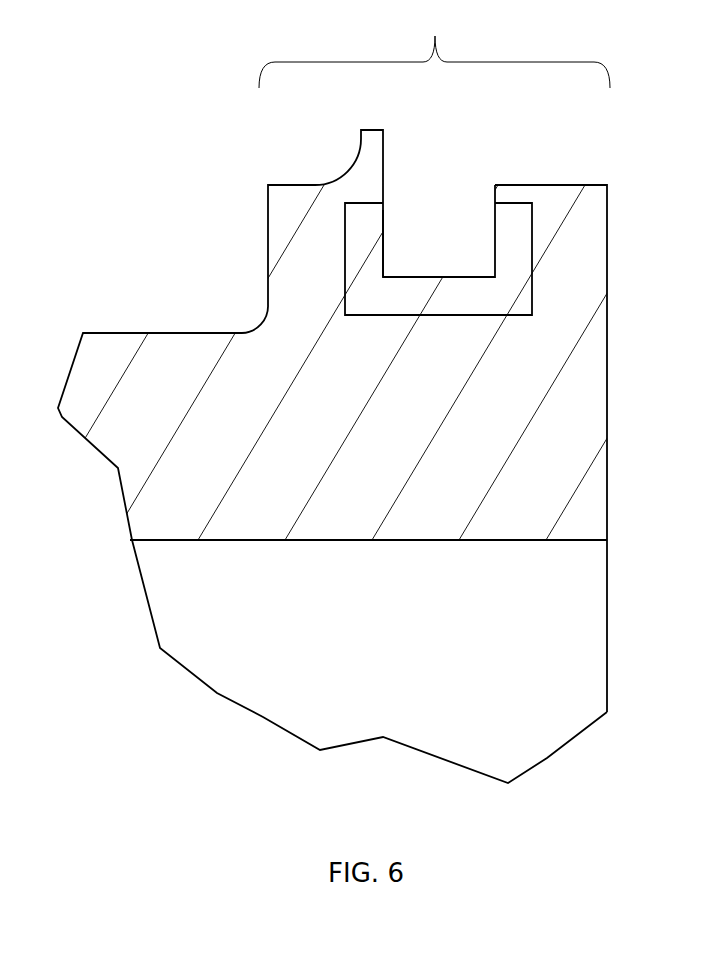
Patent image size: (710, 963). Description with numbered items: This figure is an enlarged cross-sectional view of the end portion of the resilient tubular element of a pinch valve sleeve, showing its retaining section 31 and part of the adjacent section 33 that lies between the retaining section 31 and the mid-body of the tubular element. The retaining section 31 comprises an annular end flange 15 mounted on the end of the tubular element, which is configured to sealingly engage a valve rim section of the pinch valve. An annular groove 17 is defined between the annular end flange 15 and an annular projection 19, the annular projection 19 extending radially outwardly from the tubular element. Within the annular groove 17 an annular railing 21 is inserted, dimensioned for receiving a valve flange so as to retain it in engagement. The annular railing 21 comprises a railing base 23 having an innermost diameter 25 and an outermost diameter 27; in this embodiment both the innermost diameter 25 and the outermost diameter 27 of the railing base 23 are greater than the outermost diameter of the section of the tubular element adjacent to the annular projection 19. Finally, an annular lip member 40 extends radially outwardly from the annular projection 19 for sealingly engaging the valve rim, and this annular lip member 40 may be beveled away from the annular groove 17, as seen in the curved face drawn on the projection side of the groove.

The annular end flange 15 is at (568, 186).
The annular groove 17 is at (433, 243).
The annular projection 19 is at (268, 207).
The annular railing 21 is at (382, 257).
The railing base 23 is at (432, 300).
The innermost diameter 25 is at (510, 317).
The outermost diameter 27 is at (460, 275).
The retaining section 31 is at (434, 46).
The section 33 is at (118, 332).
The annular lip member 40 is at (362, 147).